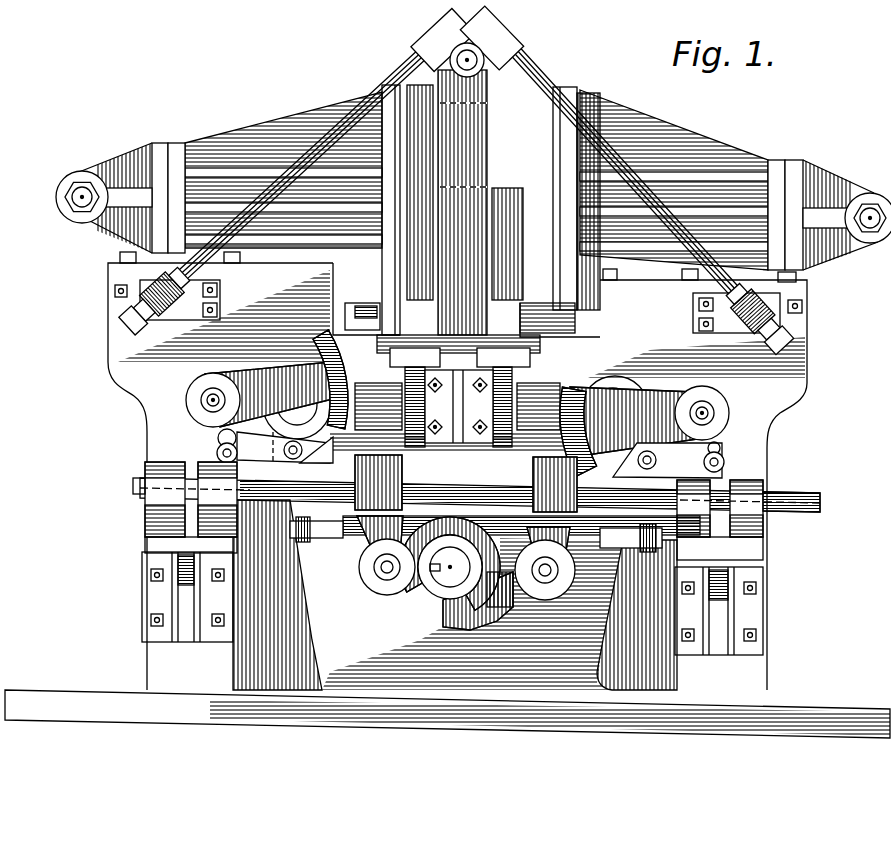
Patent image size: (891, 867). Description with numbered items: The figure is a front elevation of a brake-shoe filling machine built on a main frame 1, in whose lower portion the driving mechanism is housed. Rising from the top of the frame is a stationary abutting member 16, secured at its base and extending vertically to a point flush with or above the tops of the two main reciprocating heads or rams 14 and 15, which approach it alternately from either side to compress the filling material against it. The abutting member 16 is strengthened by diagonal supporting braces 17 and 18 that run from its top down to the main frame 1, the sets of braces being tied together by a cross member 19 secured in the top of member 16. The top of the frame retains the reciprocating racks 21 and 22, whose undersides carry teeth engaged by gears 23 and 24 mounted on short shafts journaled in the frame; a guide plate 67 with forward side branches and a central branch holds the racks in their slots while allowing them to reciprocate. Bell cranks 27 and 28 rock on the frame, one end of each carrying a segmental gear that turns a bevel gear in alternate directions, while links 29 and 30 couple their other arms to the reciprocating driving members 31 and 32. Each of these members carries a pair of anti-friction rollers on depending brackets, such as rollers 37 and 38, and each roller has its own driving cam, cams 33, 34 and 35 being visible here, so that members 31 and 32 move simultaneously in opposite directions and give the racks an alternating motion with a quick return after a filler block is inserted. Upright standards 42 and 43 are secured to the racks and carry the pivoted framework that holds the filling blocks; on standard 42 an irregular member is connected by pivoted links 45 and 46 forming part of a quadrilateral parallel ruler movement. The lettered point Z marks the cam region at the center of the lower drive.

The main frame 1 is at (769, 412).
The main reciprocating head 14 is at (280, 124).
The main reciprocating head 15 is at (667, 104).
The stationary abutting member 16 is at (468, 110).
The diagonal supporting brace 17 is at (362, 107).
The diagonal supporting brace 18 is at (540, 80).
The cross member 19 is at (460, 55).
The reciprocating rack 21 is at (415, 358).
The reciprocating rack 22 is at (503, 358).
The gear 23 is at (418, 447).
The gear 24 is at (495, 447).
The bell crank 27 is at (267, 379).
The bell crank 28 is at (660, 407).
The link 29 is at (233, 430).
The link 30 is at (708, 448).
The reciprocating driving member 31 is at (790, 503).
The reciprocating driving member 32 is at (134, 487).
The driving cam 33 is at (505, 598).
The driving cam 34 is at (480, 612).
The driving cam 35 is at (417, 586).
The anti-friction roller 37 is at (565, 580).
The anti-friction roller 38 is at (362, 567).
The upright standard 42 is at (417, 222).
The upright standard 43 is at (508, 197).
The pivoted link 45 is at (353, 310).
The pivoted link 46 is at (392, 322).
The guide plate 67 is at (453, 338).
The cam axis Z is at (448, 575).